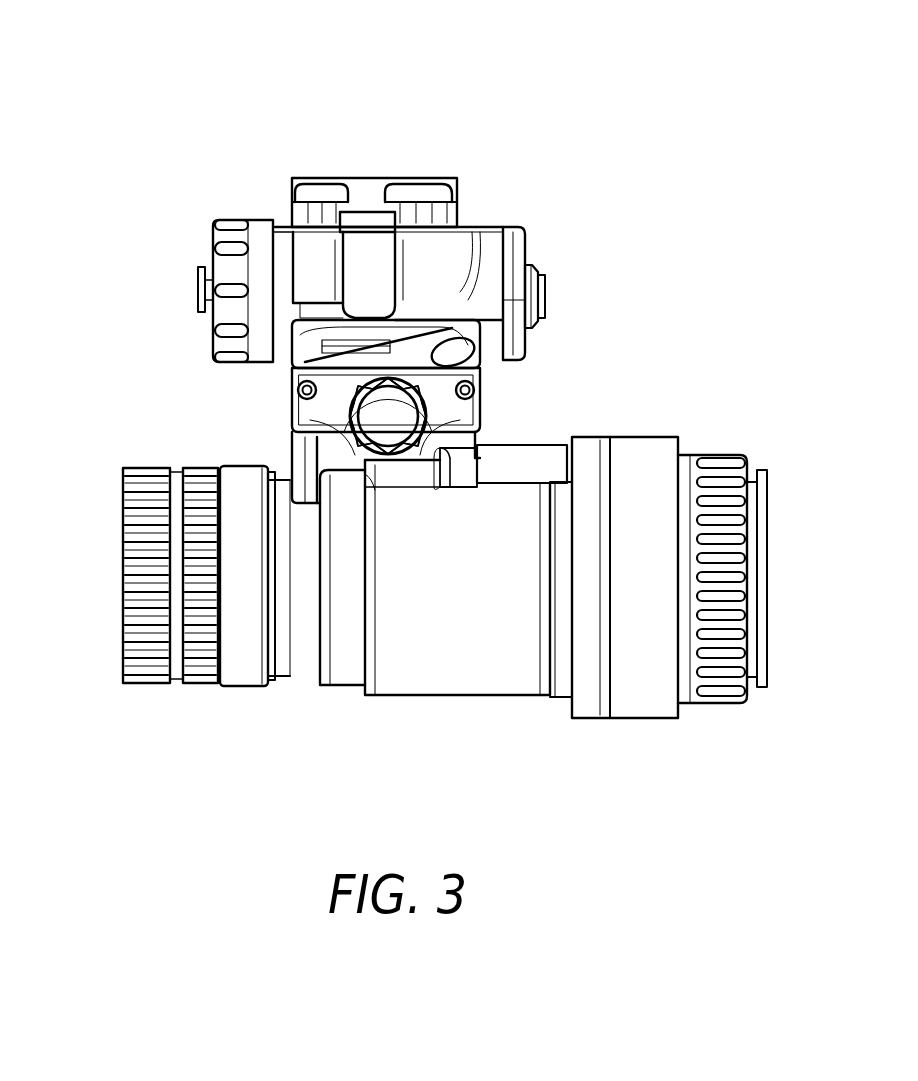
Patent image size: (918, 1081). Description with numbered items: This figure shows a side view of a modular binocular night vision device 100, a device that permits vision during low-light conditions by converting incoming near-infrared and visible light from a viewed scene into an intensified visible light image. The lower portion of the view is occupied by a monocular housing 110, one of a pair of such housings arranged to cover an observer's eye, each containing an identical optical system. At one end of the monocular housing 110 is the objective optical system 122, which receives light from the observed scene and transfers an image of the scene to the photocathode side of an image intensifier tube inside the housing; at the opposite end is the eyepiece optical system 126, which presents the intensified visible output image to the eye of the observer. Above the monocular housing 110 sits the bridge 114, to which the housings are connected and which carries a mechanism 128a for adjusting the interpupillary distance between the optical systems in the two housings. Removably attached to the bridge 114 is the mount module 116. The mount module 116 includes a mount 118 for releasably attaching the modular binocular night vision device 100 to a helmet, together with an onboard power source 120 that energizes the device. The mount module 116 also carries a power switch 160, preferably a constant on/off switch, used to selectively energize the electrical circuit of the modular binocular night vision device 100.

The modular binocular night vision device 100 is at (116, 115).
The monocular housing 110 is at (343, 683).
The bridge 114 is at (466, 410).
The mount module 116 is at (497, 258).
The mount 118 is at (330, 181).
The onboard power source 120 is at (235, 229).
The objective optical system 122 is at (130, 470).
The eyepiece optical system 126 is at (693, 690).
The mechanism for adjusting interpupillary distance 128a is at (380, 415).
The power switch 160 is at (536, 305).